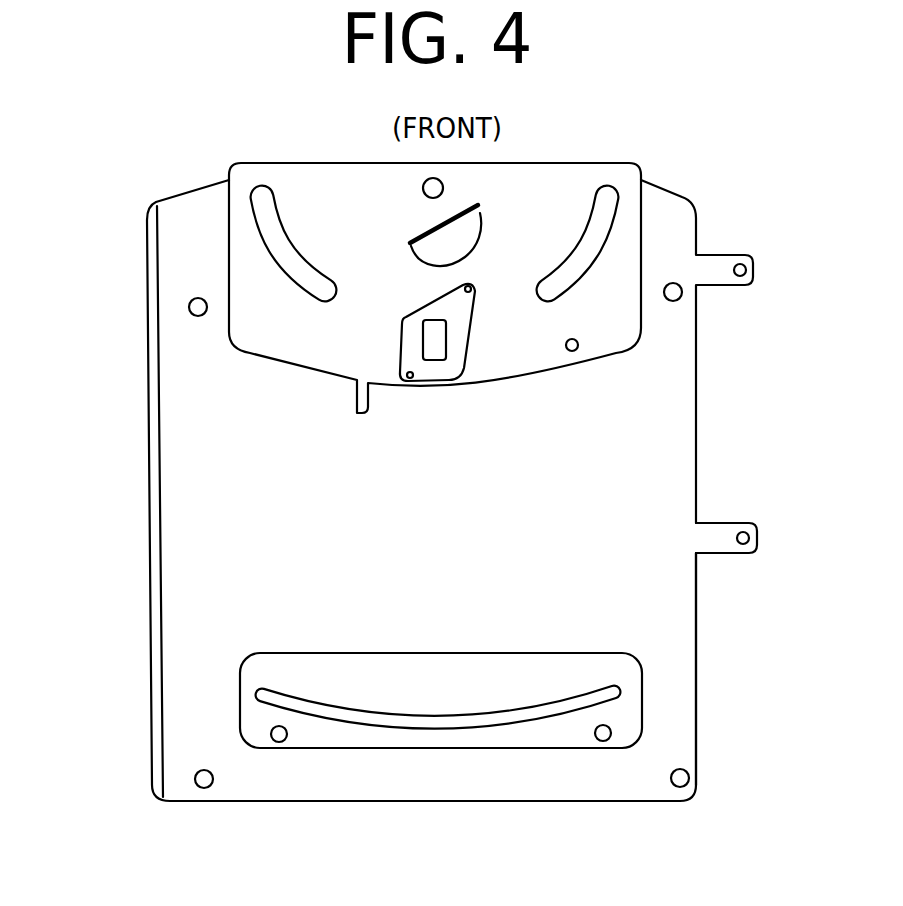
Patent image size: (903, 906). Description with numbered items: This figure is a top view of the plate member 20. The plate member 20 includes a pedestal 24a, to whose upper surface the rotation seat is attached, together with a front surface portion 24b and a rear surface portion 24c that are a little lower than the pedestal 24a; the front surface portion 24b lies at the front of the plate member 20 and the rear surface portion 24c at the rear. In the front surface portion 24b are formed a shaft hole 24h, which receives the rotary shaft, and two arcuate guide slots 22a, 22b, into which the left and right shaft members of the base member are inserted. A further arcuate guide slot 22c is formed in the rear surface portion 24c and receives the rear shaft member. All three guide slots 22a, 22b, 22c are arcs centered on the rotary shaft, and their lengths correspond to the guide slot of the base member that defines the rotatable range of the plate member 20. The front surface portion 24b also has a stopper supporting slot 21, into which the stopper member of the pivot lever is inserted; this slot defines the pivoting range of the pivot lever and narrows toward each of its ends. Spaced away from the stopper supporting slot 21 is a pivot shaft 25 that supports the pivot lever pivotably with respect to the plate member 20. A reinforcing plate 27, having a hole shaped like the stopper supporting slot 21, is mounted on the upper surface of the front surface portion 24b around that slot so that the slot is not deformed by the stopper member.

The plate member 20 is at (760, 195).
The stopper supporting slot 21 is at (436, 358).
The arcuate guide slot 22a is at (285, 255).
The arcuate guide slot 22b is at (583, 255).
The arcuate guide slot 22c is at (458, 720).
The pedestal 24a is at (683, 585).
The front surface portion 24b is at (435, 288).
The rear surface portion 24c is at (307, 733).
The shaft hole 24h is at (442, 183).
The pivot shaft 25 is at (573, 352).
The reinforcing plate 27 is at (413, 333).